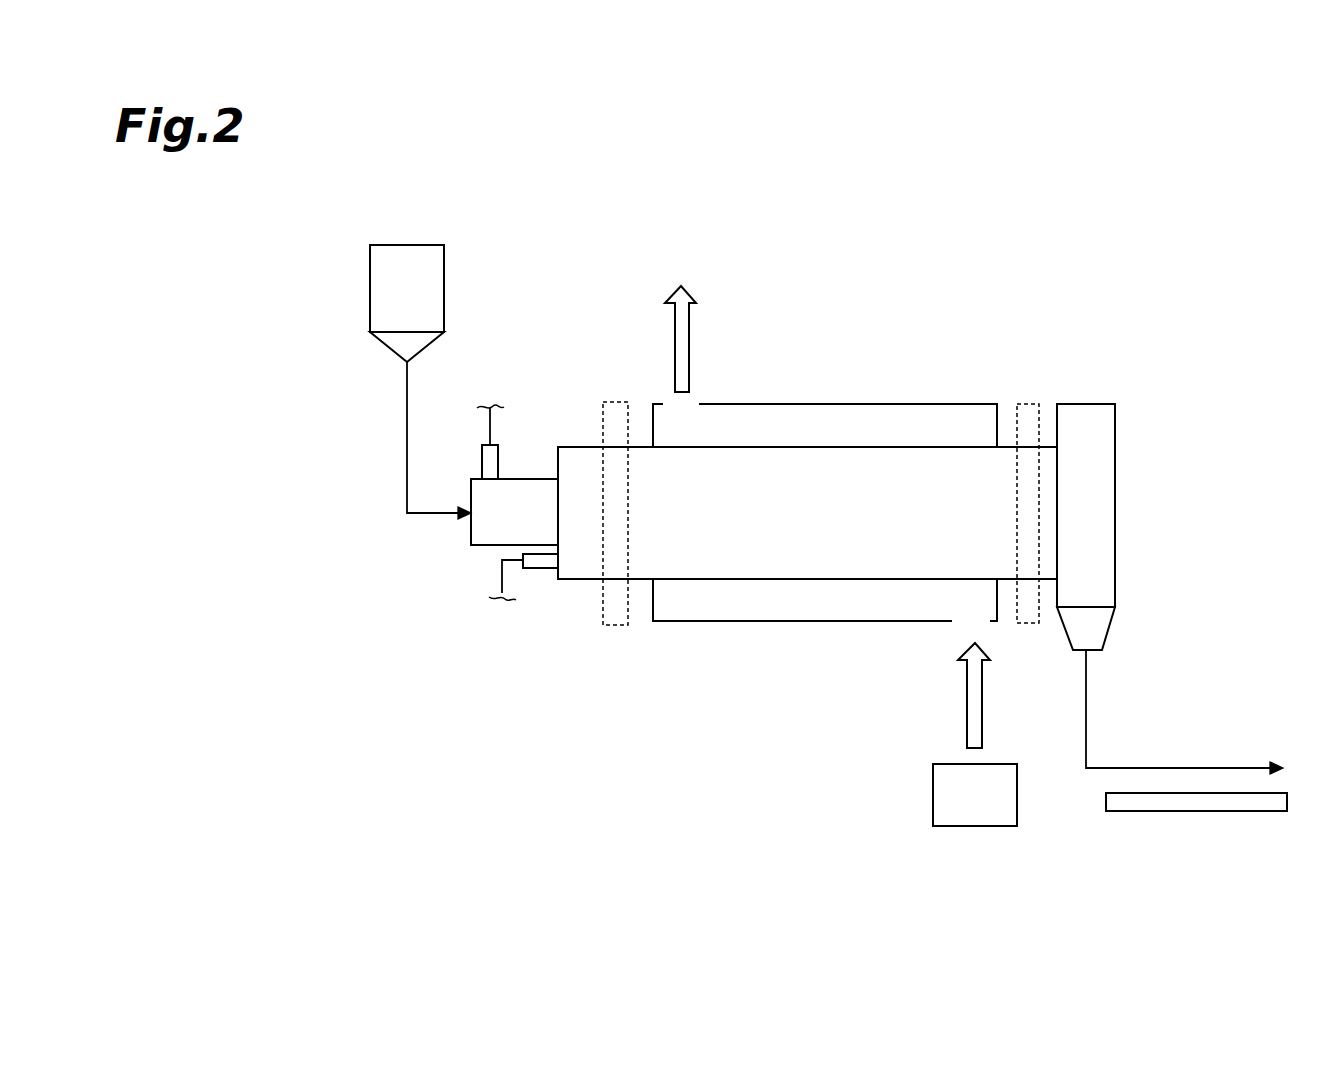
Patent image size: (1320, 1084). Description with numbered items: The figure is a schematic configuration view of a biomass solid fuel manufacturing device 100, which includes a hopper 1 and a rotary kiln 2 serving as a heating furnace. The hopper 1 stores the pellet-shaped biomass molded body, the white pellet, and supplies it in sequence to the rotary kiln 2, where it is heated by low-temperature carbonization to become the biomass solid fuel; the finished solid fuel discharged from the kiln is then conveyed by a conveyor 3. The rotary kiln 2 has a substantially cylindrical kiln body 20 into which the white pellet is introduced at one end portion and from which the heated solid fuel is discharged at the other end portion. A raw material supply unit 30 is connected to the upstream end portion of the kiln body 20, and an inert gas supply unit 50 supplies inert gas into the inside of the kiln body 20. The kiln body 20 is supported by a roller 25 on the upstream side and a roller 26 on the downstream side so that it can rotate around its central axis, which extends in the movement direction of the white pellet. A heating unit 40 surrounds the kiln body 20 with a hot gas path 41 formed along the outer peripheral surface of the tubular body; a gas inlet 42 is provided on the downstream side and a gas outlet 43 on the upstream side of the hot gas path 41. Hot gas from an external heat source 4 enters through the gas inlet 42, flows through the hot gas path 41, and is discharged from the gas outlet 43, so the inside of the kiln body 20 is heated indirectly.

The biomass solid fuel manufacturing device 100 is at (1028, 208).
The hopper 1 is at (370, 290).
The rotary kiln 2 is at (632, 670).
The conveyor 3 is at (1146, 811).
The external heat source 4 is at (975, 826).
The kiln body 20 is at (738, 580).
The roller 25 is at (603, 602).
The roller 26 is at (1029, 400).
The raw material supply unit 30 is at (530, 428).
The heating unit 40 is at (856, 360).
The hot gas path 41 is at (816, 622).
The gas inlet 42 is at (966, 622).
The gas outlet 43 is at (683, 407).
The inert gas supply unit 50 is at (458, 585).